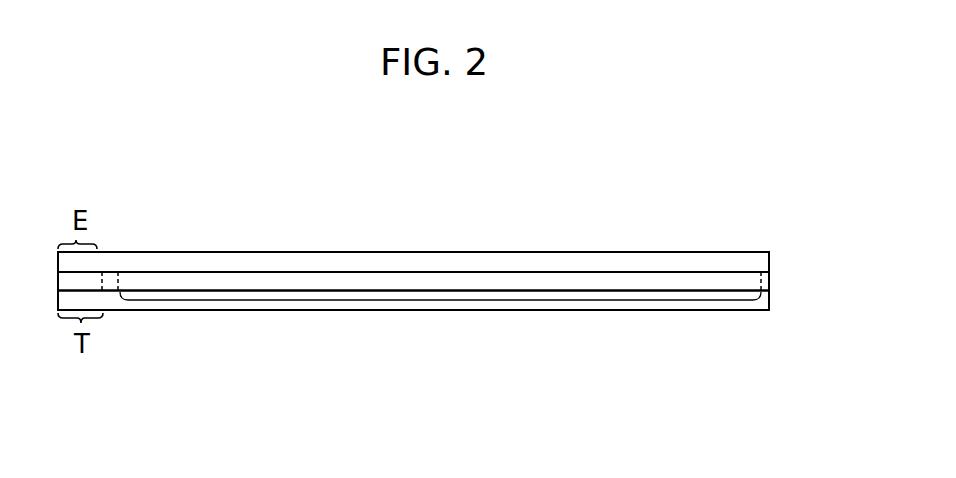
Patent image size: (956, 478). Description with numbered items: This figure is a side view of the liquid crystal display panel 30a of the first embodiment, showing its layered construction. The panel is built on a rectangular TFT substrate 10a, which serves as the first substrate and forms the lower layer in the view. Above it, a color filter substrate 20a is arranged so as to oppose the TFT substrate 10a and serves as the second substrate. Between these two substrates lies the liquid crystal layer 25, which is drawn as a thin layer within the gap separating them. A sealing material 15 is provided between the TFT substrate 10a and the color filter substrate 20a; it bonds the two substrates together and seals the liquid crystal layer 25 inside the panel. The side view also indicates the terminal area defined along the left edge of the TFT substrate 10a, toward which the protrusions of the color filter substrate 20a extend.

The liquid crystal display panel 30a is at (122, 183).
The color filter substrate 20a is at (763, 263).
The sealing material 15 is at (765, 282).
The TFT substrate 10a is at (770, 300).
The liquid crystal layer 25 is at (438, 300).